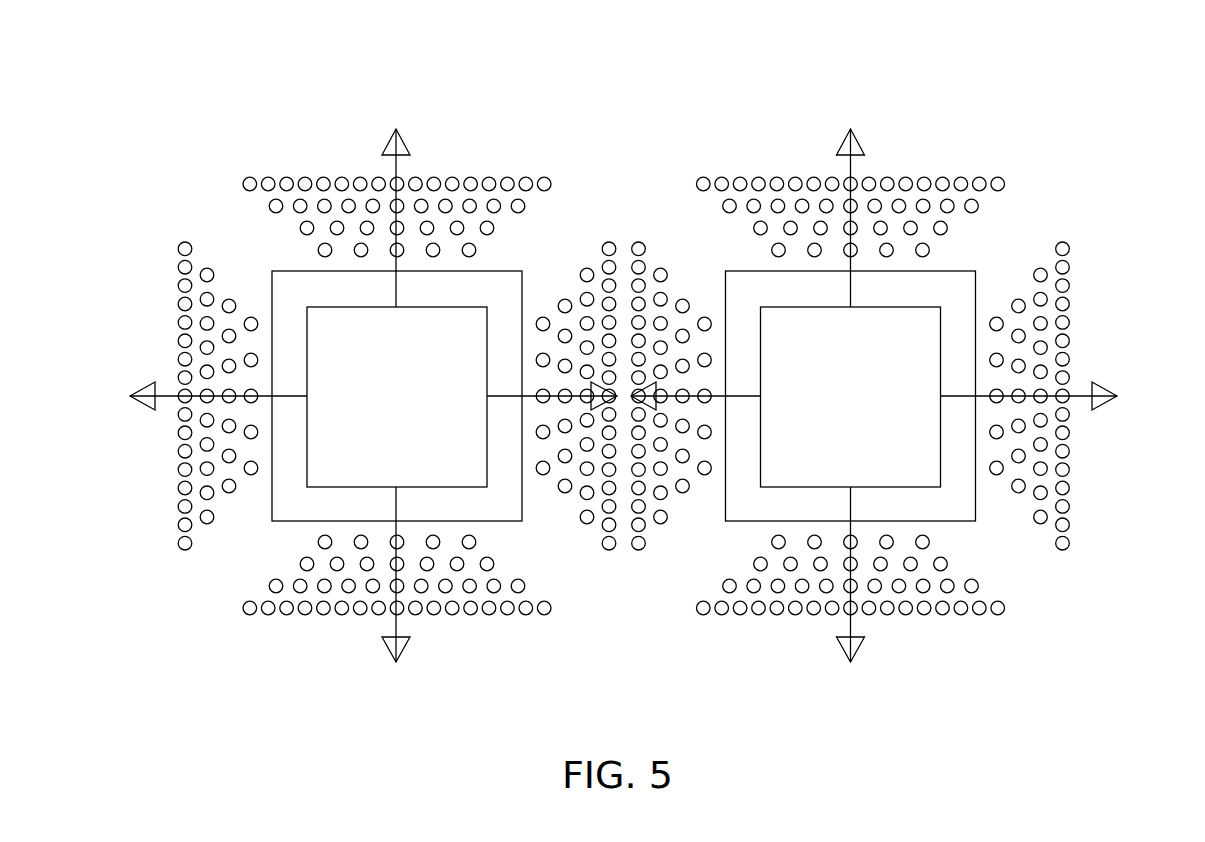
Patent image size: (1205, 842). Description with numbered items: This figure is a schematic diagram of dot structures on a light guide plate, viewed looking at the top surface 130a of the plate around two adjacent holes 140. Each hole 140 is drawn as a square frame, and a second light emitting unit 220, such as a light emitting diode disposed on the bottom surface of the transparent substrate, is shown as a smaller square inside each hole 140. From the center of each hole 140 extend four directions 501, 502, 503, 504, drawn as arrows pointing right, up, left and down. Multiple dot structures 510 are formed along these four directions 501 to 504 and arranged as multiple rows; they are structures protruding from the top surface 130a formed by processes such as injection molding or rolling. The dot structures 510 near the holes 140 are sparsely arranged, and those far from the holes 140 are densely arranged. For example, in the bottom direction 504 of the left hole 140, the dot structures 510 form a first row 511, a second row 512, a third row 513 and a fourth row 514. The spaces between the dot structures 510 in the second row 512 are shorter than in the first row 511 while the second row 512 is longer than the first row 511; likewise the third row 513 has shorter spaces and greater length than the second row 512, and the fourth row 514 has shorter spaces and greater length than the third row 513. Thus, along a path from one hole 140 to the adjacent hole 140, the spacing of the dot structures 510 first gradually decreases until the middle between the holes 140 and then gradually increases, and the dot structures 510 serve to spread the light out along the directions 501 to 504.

The top surface 130a is at (168, 61).
The hole 140 is at (272, 271).
The second light emitting unit 220 is at (487, 477).
The direction 501 is at (555, 393).
The direction 502 is at (403, 142).
The direction 503 is at (140, 404).
The bottom direction 504 is at (405, 648).
The dot structure 510 is at (573, 384).
The first row 511 is at (294, 542).
The second row 512 is at (274, 564).
The third row 513 is at (244, 587).
The fourth row 514 is at (218, 611).